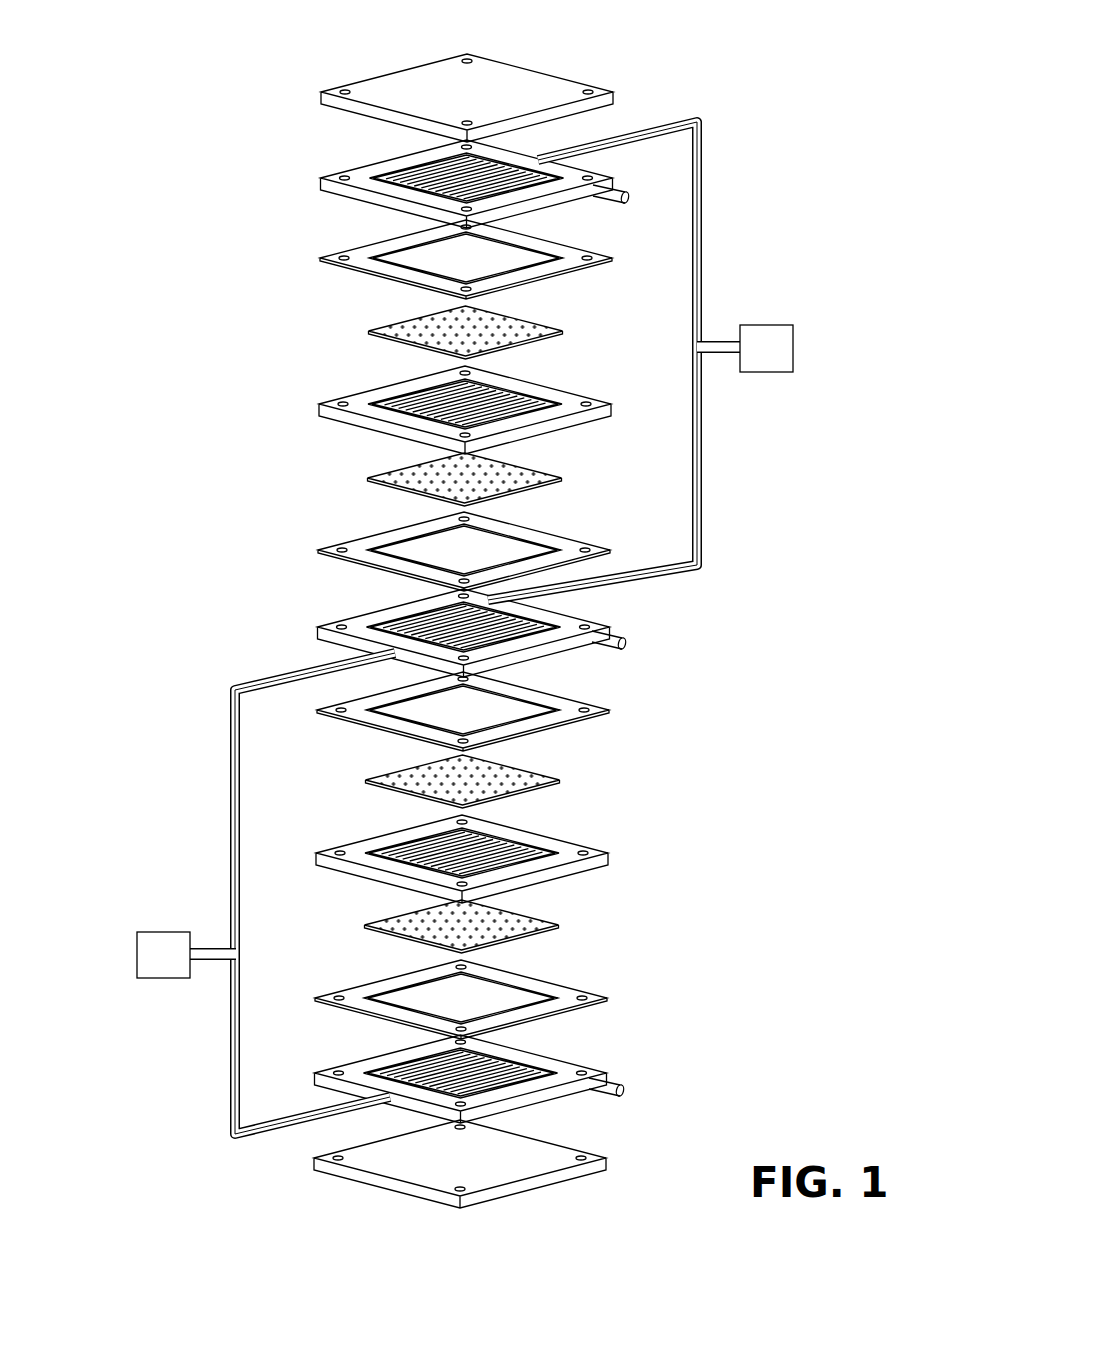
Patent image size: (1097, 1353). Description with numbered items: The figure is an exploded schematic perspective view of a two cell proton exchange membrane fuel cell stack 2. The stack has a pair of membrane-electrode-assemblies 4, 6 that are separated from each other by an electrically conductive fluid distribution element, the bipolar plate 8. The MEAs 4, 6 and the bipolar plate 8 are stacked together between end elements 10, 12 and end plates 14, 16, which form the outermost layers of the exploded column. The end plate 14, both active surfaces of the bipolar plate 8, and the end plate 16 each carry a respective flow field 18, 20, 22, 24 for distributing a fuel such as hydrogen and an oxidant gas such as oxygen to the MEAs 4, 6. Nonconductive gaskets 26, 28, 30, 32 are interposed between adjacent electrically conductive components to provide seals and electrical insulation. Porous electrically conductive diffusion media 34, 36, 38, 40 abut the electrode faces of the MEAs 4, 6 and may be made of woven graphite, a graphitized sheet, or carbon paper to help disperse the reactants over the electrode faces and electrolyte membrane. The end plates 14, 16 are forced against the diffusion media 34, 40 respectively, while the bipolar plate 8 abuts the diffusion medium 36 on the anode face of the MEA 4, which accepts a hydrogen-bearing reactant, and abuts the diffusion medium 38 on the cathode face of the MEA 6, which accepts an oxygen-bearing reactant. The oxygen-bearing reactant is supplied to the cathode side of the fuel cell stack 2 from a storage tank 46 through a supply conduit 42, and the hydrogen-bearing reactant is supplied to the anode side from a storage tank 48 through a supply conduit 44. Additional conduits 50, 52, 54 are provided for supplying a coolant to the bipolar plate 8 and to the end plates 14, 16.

The fuel cell stack 2 is at (752, 96).
The membrane-electrode-assembly 4 is at (393, 424).
The membrane-electrode-assembly 6 is at (575, 841).
The bipolar plate 8 is at (497, 633).
The end element 10 is at (393, 118).
The end element 12 is at (592, 1152).
The end plate 14 is at (442, 198).
The end plate 16 is at (522, 1063).
The flow field 18 is at (530, 192).
The flow field 20 is at (466, 633).
The flow field 22 is at (525, 632).
The flow field 24 is at (520, 1062).
The nonconductive gasket 26 is at (390, 280).
The nonconductive gasket 28 is at (392, 573).
The nonconductive gasket 30 is at (560, 712).
The nonconductive gasket 32 is at (560, 985).
The diffusion media 34 is at (392, 345).
The diffusion media 36 is at (392, 490).
The diffusion media 38 is at (560, 772).
The diffusion media 40 is at (530, 917).
The supply conduit 42 is at (704, 500).
The supply conduit 44 is at (236, 707).
The storage tank 46 is at (778, 325).
The storage tank 48 is at (143, 932).
The coolant conduit 50 is at (627, 189).
The coolant conduit 52 is at (626, 634).
The coolant conduit 54 is at (626, 1090).